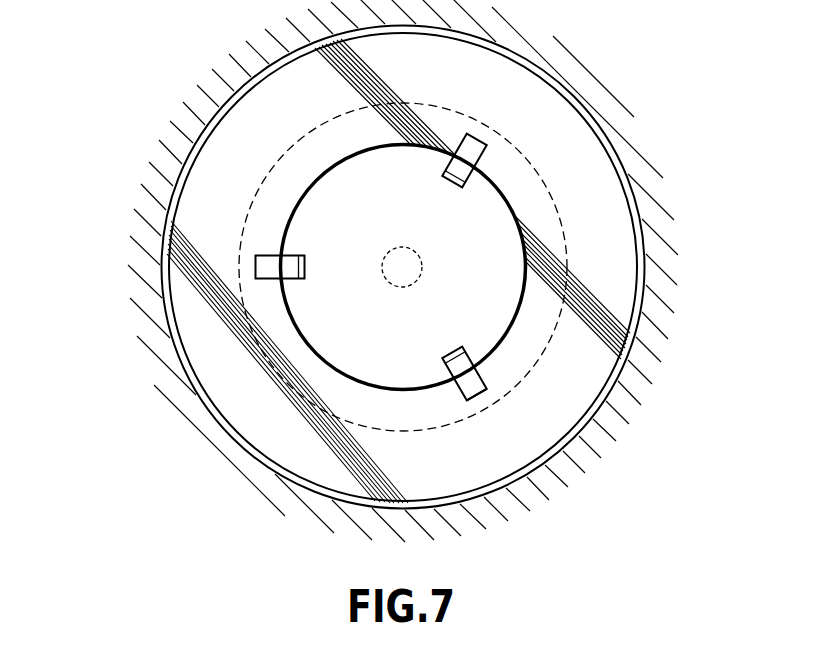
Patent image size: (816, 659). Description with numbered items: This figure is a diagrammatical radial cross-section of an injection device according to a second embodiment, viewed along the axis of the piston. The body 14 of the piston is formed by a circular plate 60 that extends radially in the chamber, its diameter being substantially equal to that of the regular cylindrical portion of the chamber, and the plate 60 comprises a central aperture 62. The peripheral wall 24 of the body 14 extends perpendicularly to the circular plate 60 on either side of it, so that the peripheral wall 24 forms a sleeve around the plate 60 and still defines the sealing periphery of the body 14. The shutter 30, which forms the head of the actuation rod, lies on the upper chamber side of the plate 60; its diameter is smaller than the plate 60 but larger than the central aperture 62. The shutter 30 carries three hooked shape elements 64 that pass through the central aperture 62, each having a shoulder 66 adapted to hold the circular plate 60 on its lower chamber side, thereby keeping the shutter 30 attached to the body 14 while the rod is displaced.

The body 14 is at (203, 232).
The peripheral wall 24 is at (568, 88).
The shutter 30 is at (313, 327).
The circular plate 60 is at (577, 168).
The central aperture 62 is at (328, 207).
The hooked shape element 64 is at (292, 267).
The shoulder 66 is at (473, 400).